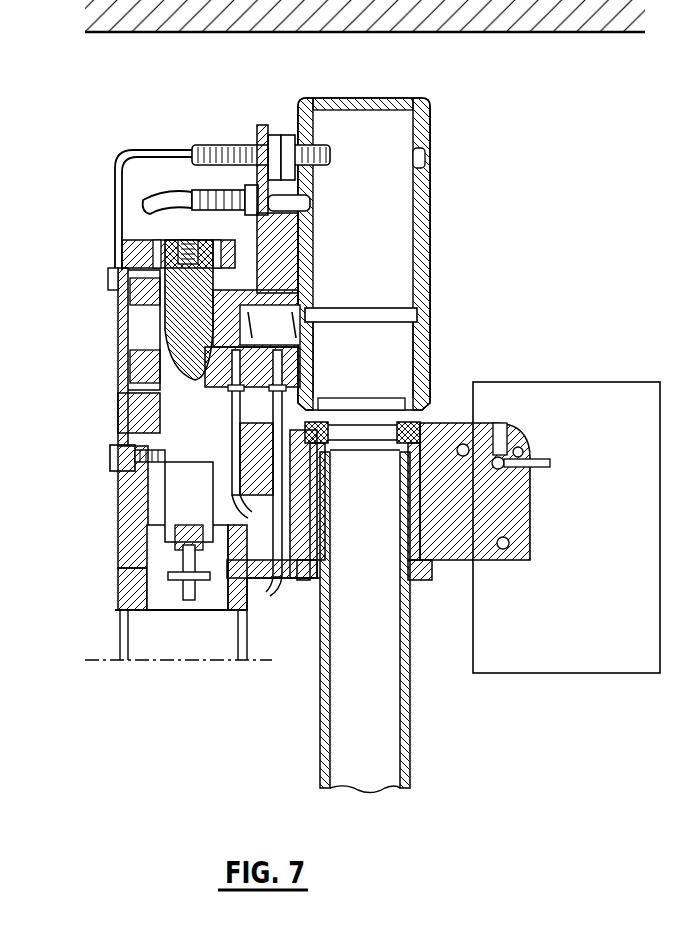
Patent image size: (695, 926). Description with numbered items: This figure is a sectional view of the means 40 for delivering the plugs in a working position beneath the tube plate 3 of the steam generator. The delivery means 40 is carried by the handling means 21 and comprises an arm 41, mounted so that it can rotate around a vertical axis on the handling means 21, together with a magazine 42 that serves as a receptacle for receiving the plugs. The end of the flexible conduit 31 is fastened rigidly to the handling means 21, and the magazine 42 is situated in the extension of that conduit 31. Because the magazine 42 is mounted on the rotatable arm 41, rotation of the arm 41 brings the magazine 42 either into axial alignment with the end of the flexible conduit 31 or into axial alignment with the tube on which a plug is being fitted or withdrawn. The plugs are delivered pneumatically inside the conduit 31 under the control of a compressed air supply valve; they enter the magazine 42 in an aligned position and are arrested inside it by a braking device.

The tube plate 3 is at (437, 6).
The magazine 42 is at (430, 298).
The arm 41 is at (140, 253).
The means for delivering the plugs 40 is at (106, 628).
The handling means 21 is at (540, 527).
The flexible conduit 31 is at (410, 777).